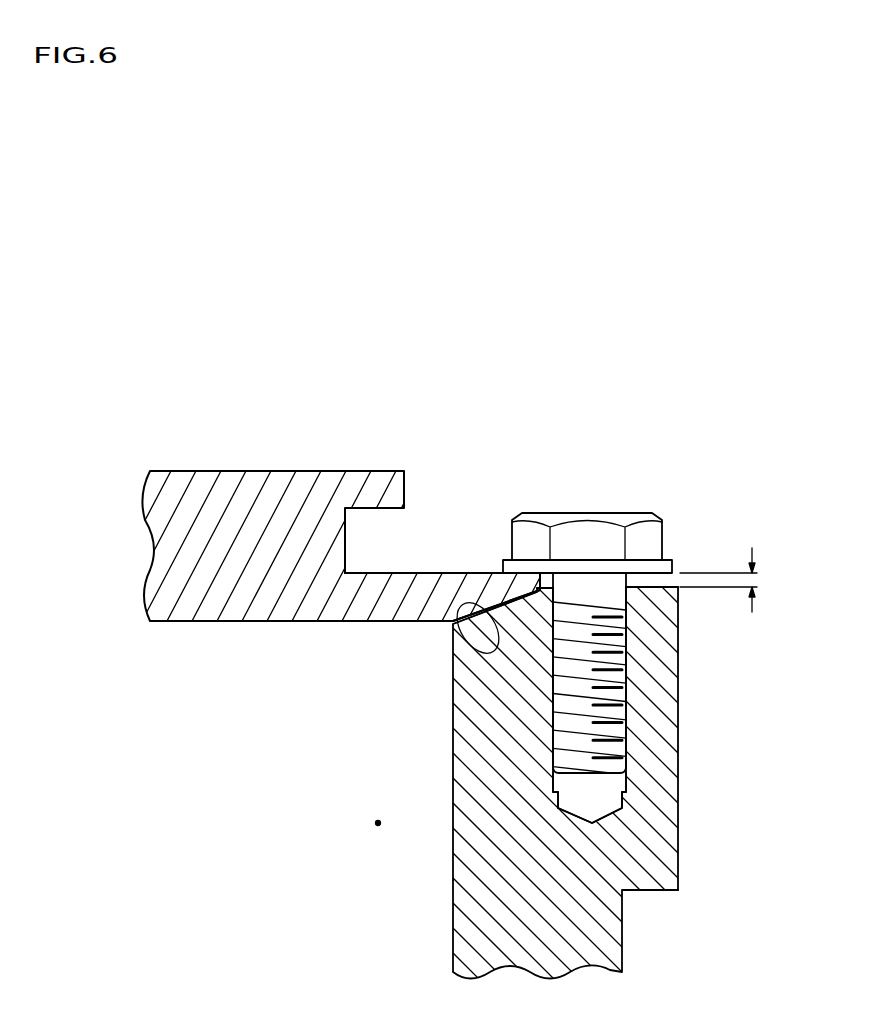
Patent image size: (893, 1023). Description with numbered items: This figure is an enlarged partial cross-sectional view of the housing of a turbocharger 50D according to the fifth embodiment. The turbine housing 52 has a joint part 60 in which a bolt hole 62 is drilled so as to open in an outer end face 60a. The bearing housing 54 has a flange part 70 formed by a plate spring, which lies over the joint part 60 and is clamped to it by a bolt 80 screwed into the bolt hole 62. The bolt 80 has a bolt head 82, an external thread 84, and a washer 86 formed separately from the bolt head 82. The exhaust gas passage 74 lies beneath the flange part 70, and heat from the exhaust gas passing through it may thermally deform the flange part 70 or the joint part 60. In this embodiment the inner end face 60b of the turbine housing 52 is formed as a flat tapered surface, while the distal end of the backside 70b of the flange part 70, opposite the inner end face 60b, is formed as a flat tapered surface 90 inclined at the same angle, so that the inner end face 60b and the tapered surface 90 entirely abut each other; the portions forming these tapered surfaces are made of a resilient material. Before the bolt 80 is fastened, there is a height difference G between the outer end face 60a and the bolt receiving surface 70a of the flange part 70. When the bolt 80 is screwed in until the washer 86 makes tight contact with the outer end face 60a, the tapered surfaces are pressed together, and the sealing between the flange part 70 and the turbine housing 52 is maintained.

The turbocharger 50D is at (467, 449).
The turbine housing 52 is at (626, 921).
The bearing housing 54 is at (230, 470).
The joint part 60 is at (679, 655).
The outer end face 60a is at (668, 587).
The inner end face 60b is at (458, 620).
The bolt hole 62 is at (624, 786).
The flange part 70 is at (418, 572).
The bolt receiving surface 70a is at (490, 571).
The backside 70b is at (374, 623).
The exhaust gas passage 74 is at (378, 823).
The bolt 80 is at (629, 612).
The bolt head 82 is at (558, 512).
The external thread 84 is at (583, 753).
The washer 86 is at (674, 565).
The tapered surface 90 is at (480, 645).
The height difference G is at (721, 567).